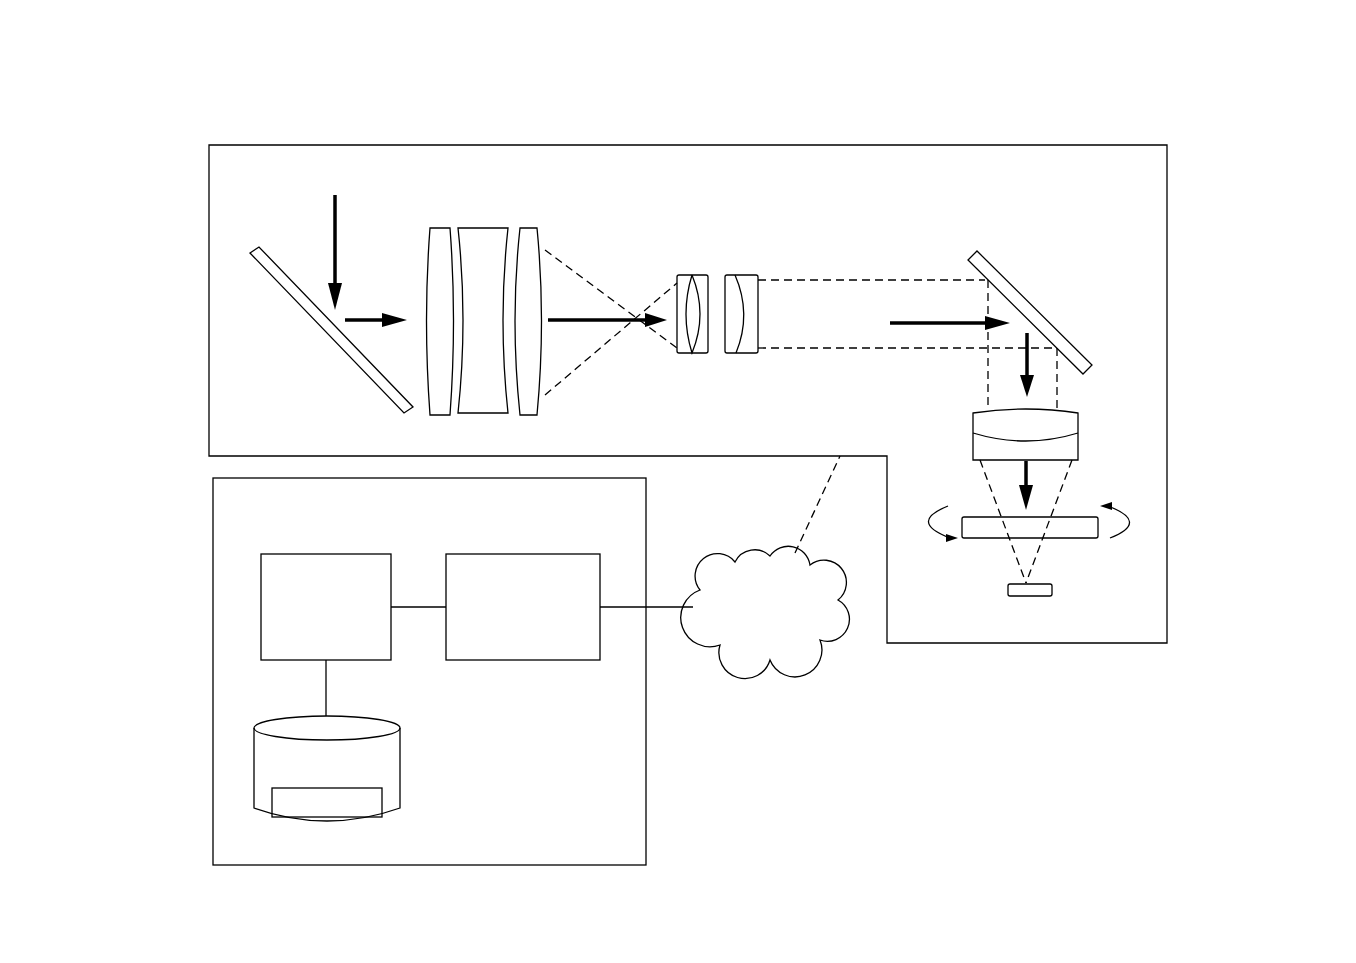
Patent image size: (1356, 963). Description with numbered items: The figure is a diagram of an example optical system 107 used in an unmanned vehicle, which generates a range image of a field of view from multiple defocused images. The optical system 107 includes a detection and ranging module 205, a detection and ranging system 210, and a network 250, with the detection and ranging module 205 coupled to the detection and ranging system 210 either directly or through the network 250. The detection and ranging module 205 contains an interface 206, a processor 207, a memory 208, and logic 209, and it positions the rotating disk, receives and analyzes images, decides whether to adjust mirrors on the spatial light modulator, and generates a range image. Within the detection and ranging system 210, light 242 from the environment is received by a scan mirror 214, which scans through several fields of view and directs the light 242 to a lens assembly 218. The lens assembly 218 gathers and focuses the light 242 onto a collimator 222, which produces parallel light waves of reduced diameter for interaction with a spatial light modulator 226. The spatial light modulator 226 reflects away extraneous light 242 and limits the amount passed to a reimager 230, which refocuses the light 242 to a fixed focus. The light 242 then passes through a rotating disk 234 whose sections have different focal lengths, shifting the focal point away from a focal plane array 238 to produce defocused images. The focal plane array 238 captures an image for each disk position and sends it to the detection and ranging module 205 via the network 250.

The optical system 107 is at (245, 77).
The detection and ranging system 210 is at (510, 131).
The light 242 is at (337, 210).
The scan mirror 214 is at (318, 327).
The lens assembly 218 is at (538, 407).
The collimator 222 is at (732, 355).
The spatial light modulator 226 is at (1042, 258).
The reimager 230 is at (1076, 437).
The rotating disk 234 is at (1077, 539).
The focal plane array 238 is at (1008, 596).
The detection and ranging module 205 is at (212, 517).
The processor 207 is at (261, 589).
The interface 206 is at (540, 660).
The memory 208 is at (253, 751).
The logic 209 is at (272, 800).
The network 250 is at (778, 662).